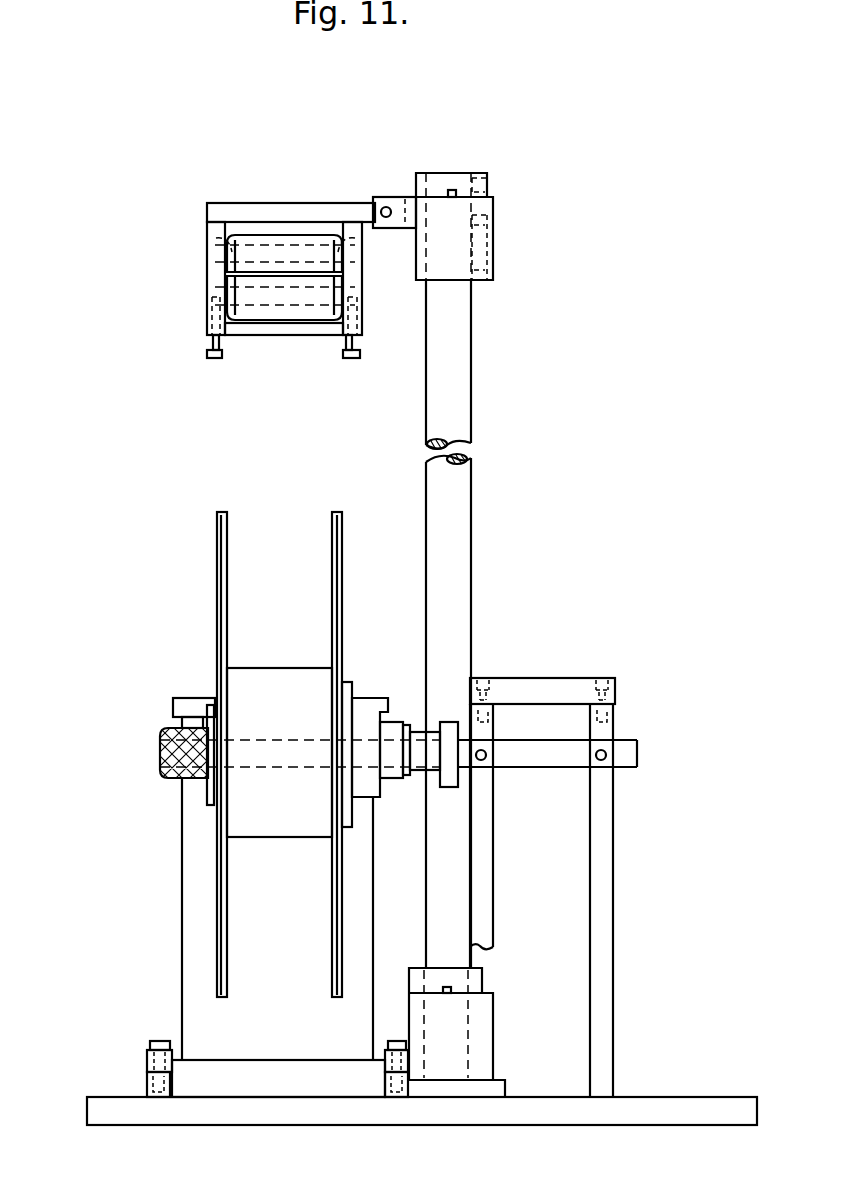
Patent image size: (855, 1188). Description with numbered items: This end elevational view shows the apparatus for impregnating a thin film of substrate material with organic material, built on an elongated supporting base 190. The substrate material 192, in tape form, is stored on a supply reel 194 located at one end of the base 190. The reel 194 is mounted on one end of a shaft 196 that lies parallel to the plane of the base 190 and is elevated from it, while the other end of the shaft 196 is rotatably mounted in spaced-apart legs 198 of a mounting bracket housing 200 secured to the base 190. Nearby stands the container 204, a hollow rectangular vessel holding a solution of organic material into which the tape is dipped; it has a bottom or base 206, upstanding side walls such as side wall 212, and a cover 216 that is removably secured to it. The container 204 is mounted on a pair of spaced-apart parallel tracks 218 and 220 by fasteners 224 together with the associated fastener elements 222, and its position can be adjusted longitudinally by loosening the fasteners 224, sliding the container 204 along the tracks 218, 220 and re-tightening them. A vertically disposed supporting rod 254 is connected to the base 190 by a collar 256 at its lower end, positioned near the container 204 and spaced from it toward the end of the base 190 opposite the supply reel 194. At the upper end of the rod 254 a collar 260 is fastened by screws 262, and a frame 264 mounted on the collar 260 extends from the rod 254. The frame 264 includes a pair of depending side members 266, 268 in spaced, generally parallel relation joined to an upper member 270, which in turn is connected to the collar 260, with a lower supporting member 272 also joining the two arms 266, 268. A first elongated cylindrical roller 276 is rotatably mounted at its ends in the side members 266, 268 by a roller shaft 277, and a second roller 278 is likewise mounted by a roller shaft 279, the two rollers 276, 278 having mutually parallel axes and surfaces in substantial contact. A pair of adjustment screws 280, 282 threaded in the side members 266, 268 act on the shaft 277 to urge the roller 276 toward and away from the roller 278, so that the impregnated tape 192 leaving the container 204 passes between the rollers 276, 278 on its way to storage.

The supporting base 190 is at (100, 1105).
The substrate material 192 is at (275, 668).
The supply reel 194 is at (332, 553).
The shaft 196 is at (255, 766).
The legs 198 is at (590, 858).
The mounting bracket housing 200 is at (600, 660).
The container 204 is at (166, 702).
The base 206 is at (247, 1062).
The side wall 212 is at (182, 892).
The cover 216 is at (190, 698).
The track 218 is at (147, 1082).
The track 220 is at (403, 1097).
The nut 222 is at (147, 1058).
The fasteners 224 is at (158, 1043).
The supporting rod 254 is at (471, 457).
The collar 256 is at (493, 1028).
The collar 260 is at (493, 230).
The screws 262 is at (487, 206).
The frame 264 is at (224, 192).
The side member 266 is at (207, 270).
The side member 268 is at (362, 283).
The top bar 270 is at (290, 205).
The lower supporting member 272 is at (255, 336).
The first roller 276 is at (297, 321).
The roller shaft 277 is at (220, 284).
The second roller 278 is at (305, 238).
The roller shaft 279 is at (218, 240).
The adjustment screw 280 is at (207, 354).
The adjustment screw 282 is at (360, 354).